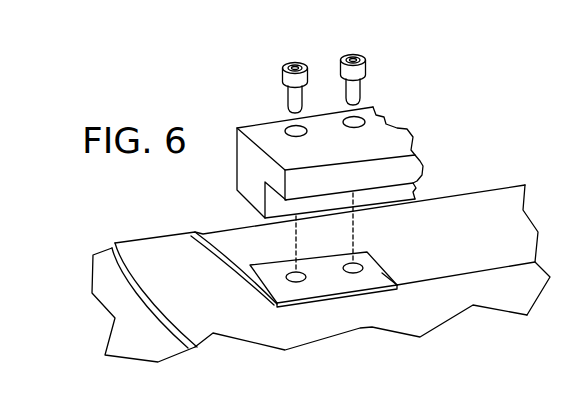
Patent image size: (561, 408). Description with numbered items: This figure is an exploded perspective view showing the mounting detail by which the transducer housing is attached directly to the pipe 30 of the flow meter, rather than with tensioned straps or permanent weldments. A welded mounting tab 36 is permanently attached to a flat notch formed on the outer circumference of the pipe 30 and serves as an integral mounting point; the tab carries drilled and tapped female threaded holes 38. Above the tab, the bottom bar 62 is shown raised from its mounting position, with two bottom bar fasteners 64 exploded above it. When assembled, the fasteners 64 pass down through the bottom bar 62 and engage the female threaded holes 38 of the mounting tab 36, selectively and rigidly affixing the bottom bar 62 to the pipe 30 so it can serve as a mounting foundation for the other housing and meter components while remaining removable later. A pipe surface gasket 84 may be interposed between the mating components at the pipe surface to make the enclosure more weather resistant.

The pipe 30 is at (107, 287).
The mounting tab 36 is at (388, 271).
The female threaded holes 38 is at (358, 266).
The bottom bar 62 is at (380, 141).
The bottom bar fasteners 64 is at (285, 81).
The pipe surface gasket 84 is at (213, 320).